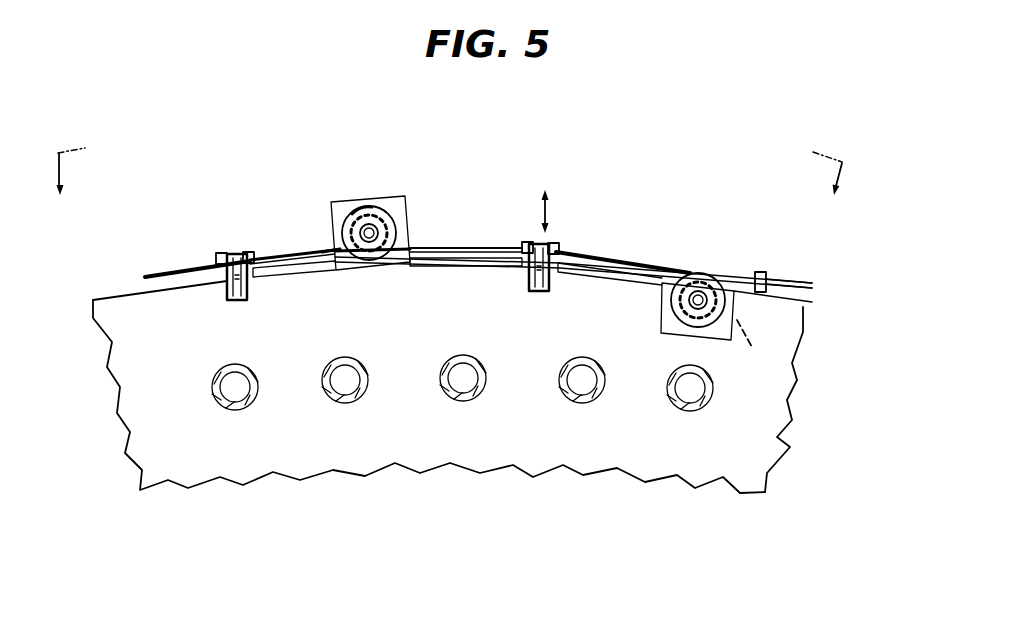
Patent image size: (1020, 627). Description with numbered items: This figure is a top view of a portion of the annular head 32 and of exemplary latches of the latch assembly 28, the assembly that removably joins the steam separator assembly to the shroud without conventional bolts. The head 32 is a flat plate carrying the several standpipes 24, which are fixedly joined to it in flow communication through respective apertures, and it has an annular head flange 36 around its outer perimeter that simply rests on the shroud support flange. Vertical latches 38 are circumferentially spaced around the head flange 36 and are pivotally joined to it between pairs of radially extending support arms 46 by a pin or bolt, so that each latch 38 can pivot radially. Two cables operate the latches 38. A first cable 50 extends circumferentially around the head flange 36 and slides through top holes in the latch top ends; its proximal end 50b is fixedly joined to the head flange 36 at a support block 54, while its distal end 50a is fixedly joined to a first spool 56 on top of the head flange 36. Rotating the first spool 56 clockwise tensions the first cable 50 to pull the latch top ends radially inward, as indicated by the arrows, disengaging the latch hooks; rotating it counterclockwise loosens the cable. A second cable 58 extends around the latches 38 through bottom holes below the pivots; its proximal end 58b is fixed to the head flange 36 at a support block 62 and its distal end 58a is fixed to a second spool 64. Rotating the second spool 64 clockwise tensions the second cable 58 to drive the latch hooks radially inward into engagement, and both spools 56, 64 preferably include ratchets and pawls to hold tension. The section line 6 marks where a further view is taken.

The section line 6- 6 is at (450, 185).
The standpipes 24 is at (462, 402).
The latch assembly 28 is at (611, 245).
The head 32 is at (618, 490).
The head flange 36 is at (805, 331).
The latches 38 is at (221, 246).
The support arms 46 is at (247, 251).
The first cable 50 is at (346, 264).
The first cable distal end 50a is at (742, 346).
The first cable proximal end 50b is at (772, 271).
The support block 54 is at (760, 272).
The first spool 56 is at (696, 271).
The second cable 58 is at (286, 246).
The second cable distal end 58a is at (362, 210).
The second cable proximal end 58b is at (323, 248).
The support block 62 is at (338, 247).
The second spool 64 is at (402, 195).